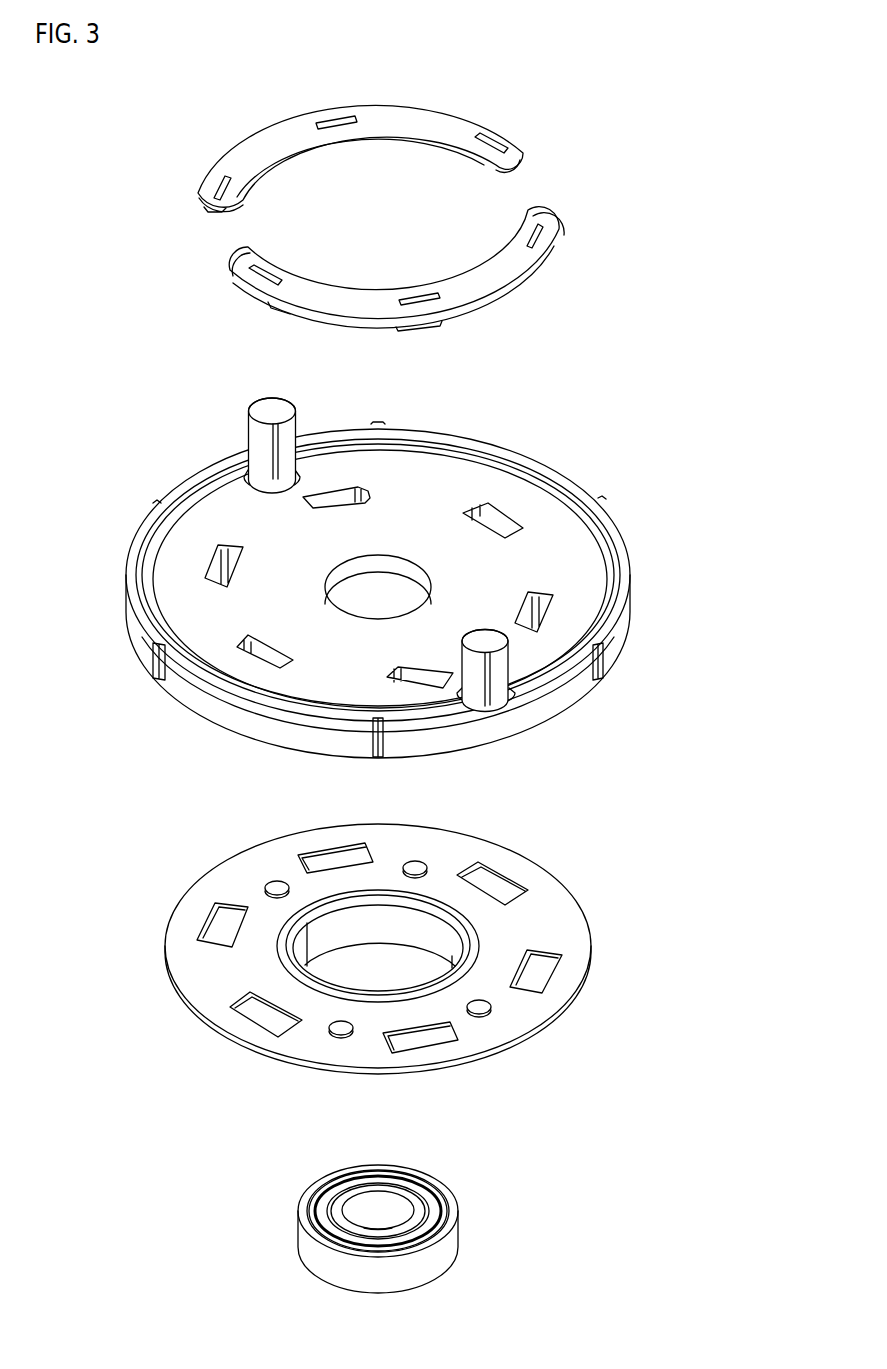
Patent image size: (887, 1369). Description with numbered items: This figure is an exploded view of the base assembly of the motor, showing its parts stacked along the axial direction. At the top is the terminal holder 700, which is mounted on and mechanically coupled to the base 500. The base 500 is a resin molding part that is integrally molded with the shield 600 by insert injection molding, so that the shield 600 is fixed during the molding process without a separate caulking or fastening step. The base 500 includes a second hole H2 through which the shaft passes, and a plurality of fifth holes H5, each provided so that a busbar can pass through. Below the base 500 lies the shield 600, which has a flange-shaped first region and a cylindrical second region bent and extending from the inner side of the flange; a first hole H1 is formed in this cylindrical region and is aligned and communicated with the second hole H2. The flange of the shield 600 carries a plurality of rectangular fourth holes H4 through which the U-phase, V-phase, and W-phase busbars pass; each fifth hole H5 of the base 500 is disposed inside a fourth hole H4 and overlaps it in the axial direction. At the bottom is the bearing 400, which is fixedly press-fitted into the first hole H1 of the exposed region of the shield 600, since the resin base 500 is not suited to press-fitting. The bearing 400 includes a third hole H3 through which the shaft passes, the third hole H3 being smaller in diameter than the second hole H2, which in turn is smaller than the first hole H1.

The terminal holder 700 is at (534, 216).
The base 500 is at (404, 578).
The second hole H2 is at (356, 592).
The fifth hole H5 is at (502, 521).
The shield 600 is at (416, 931).
The first hole H1 is at (381, 956).
The fourth hole H4 is at (497, 883).
The bearing 400 is at (444, 1201).
The third hole H3 is at (380, 1206).